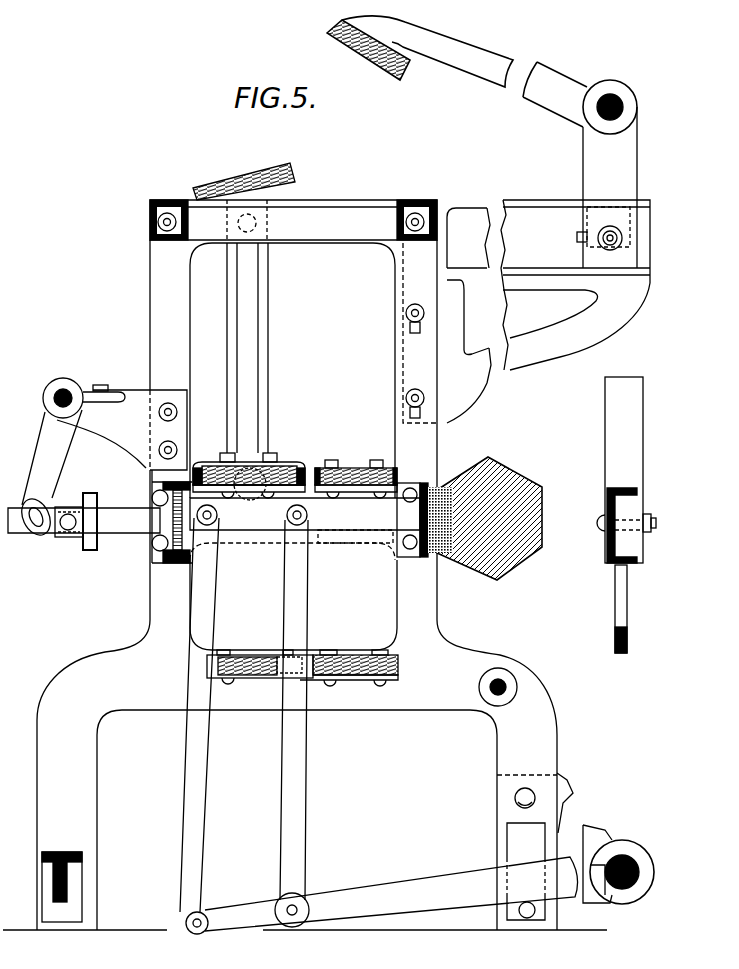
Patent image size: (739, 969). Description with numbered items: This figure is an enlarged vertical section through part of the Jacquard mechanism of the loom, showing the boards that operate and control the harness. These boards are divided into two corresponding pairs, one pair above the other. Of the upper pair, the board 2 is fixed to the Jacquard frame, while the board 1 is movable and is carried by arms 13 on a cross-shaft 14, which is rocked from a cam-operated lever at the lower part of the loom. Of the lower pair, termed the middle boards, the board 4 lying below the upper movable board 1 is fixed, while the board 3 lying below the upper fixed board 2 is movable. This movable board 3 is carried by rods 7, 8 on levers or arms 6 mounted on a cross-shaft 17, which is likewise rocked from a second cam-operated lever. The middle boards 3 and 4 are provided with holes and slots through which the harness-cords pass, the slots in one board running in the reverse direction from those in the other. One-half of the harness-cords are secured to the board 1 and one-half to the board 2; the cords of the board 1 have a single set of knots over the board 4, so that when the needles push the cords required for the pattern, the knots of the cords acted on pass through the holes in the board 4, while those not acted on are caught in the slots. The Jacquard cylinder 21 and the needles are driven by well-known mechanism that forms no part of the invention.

The board 1 is at (368, 52).
The arms 13 is at (464, 71).
The cross-shaft 14 is at (603, 96).
The board 2 is at (244, 175).
The board 3 is at (277, 470).
The board 4 is at (343, 470).
The Jacquard cylinder 21 is at (488, 518).
The rod 7 is at (199, 726).
The rod 8 is at (292, 723).
The levers or arms 6 is at (391, 894).
The cross-shaft 17 is at (637, 862).